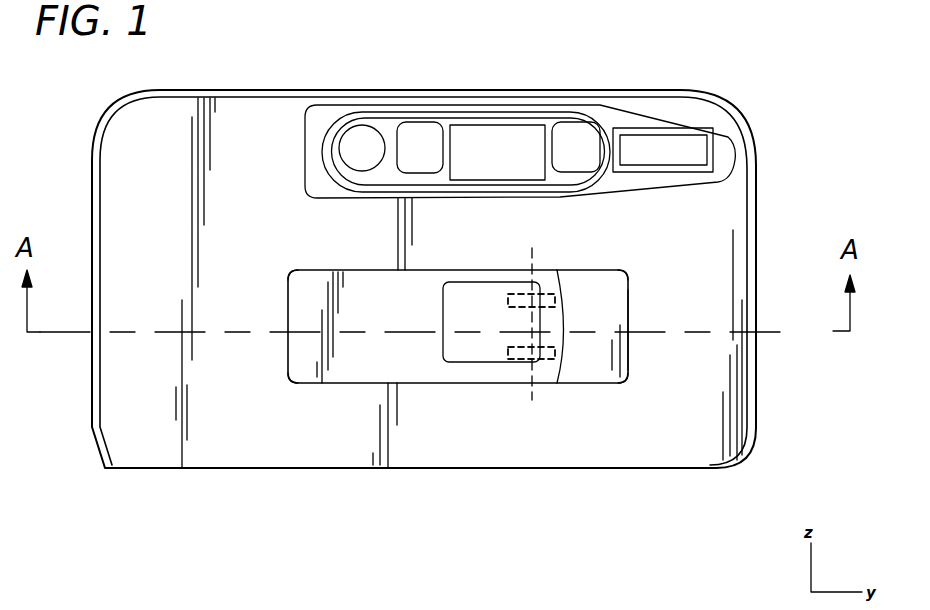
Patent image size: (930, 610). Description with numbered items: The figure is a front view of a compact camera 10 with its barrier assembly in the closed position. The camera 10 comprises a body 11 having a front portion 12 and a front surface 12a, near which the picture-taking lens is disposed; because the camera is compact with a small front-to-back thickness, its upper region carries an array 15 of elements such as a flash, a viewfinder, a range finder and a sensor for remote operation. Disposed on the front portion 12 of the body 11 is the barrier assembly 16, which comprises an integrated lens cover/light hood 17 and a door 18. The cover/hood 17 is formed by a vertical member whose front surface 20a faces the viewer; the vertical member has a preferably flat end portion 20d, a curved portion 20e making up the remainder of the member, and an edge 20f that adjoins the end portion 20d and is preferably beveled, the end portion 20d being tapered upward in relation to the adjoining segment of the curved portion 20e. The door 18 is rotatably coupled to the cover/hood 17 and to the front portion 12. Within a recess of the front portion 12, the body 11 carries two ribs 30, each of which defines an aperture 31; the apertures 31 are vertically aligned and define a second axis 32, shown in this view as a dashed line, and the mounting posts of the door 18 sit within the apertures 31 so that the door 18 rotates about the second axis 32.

The camera 10 is at (750, 128).
The body 11 is at (94, 140).
The front portion 12 is at (750, 435).
The front surface 12a is at (732, 413).
The array 15 is at (603, 120).
The barrier assembly 16 is at (633, 268).
The integrated lens cover/light hood 17 is at (288, 280).
The door 18 is at (475, 308).
The front surface 20a is at (350, 312).
The end portion 20d is at (580, 383).
The curved portion 20e is at (333, 385).
The edge 20f is at (628, 298).
The ribs 30 is at (555, 298).
The apertures 31 is at (522, 300).
The second axis 32 is at (533, 256).